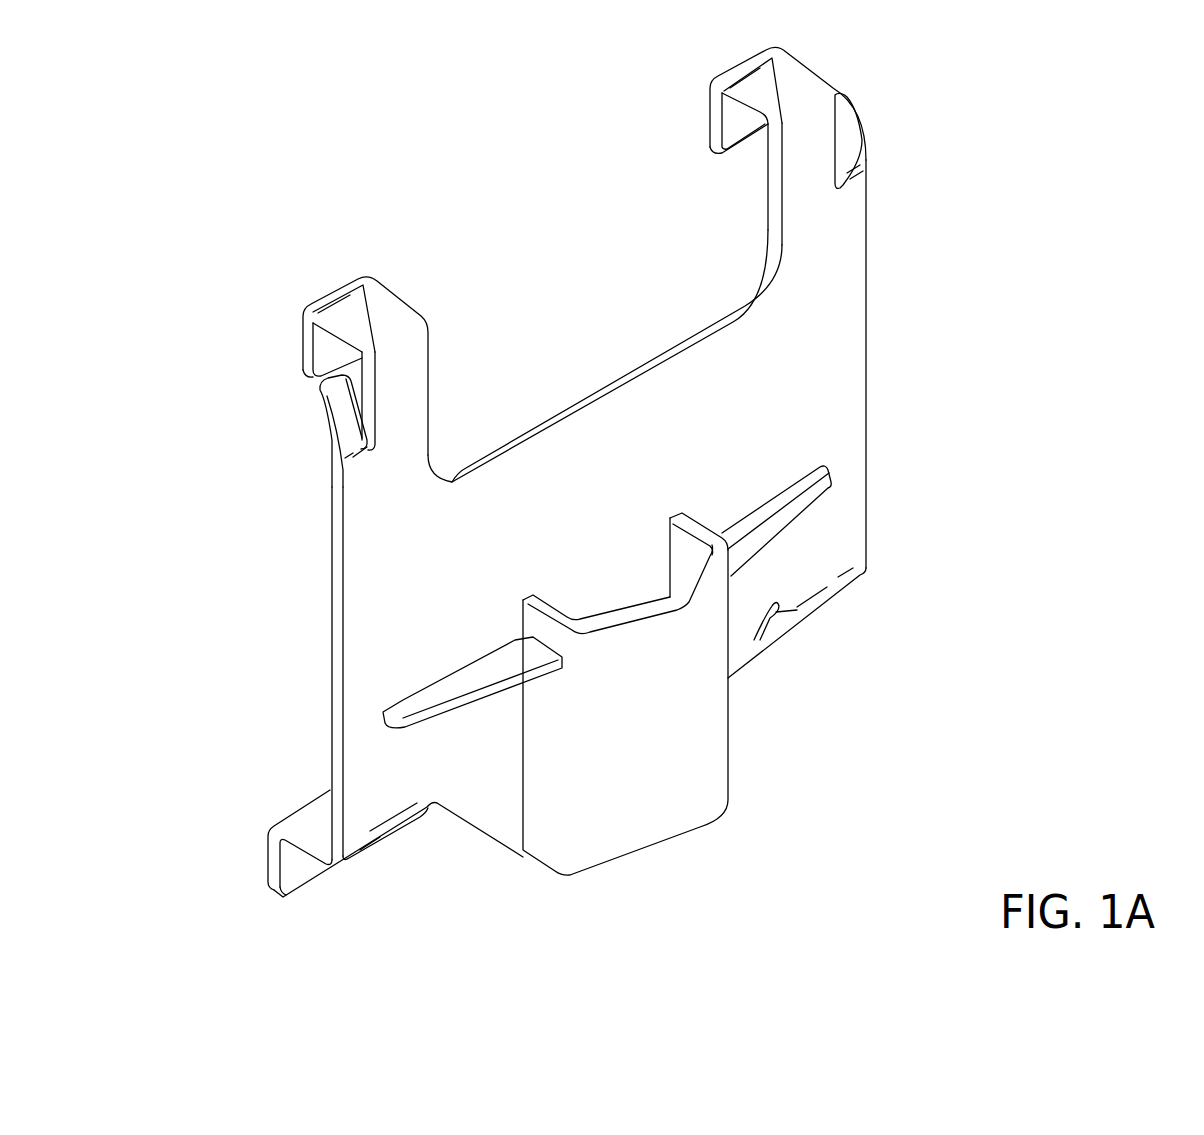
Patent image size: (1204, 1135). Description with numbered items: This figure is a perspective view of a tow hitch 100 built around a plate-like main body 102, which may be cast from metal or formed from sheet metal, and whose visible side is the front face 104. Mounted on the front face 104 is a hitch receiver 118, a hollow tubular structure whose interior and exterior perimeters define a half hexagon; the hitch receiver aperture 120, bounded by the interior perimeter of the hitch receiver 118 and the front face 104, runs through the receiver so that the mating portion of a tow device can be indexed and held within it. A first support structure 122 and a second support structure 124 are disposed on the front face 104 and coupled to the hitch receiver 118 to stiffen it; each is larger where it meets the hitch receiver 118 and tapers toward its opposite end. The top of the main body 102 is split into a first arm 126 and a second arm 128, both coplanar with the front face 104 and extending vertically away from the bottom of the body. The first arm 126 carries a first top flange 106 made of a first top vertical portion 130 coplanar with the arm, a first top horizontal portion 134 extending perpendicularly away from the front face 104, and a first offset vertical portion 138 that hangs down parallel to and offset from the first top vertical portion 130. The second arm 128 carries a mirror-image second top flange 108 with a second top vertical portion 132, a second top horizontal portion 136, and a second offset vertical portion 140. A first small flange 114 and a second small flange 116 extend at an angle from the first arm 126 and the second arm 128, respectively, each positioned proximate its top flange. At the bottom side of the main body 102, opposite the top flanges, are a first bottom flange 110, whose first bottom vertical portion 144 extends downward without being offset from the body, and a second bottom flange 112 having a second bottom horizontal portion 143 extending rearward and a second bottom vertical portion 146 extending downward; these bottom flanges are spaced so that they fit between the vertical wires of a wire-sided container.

The tow hitch 100 is at (1043, 162).
The main body 102 is at (869, 293).
The front face 104 is at (800, 384).
The first top flange 106 is at (816, 57).
The second top flange 108 is at (380, 248).
The first bottom flange 110 is at (808, 623).
The second bottom flange 112 is at (252, 880).
The first small flange 114 is at (846, 126).
The second small flange 116 is at (341, 409).
The hitch receiver 118 is at (605, 851).
The hitch receiver aperture 120 is at (620, 600).
The first support structure 122 is at (785, 500).
The second support structure 124 is at (455, 678).
The first arm 126 is at (838, 240).
The second arm 128 is at (352, 487).
The first top vertical portion 130 is at (795, 144).
The second top vertical portion 132 is at (406, 370).
The first top horizontal portion 134 is at (772, 85).
The second top horizontal portion 136 is at (388, 314).
The first offset vertical portion 138 is at (716, 116).
The second offset vertical portion 140 is at (327, 343).
The second bottom horizontal portion 143 is at (305, 824).
The first bottom vertical portion 144 is at (755, 638).
The second bottom vertical portion 146 is at (303, 876).